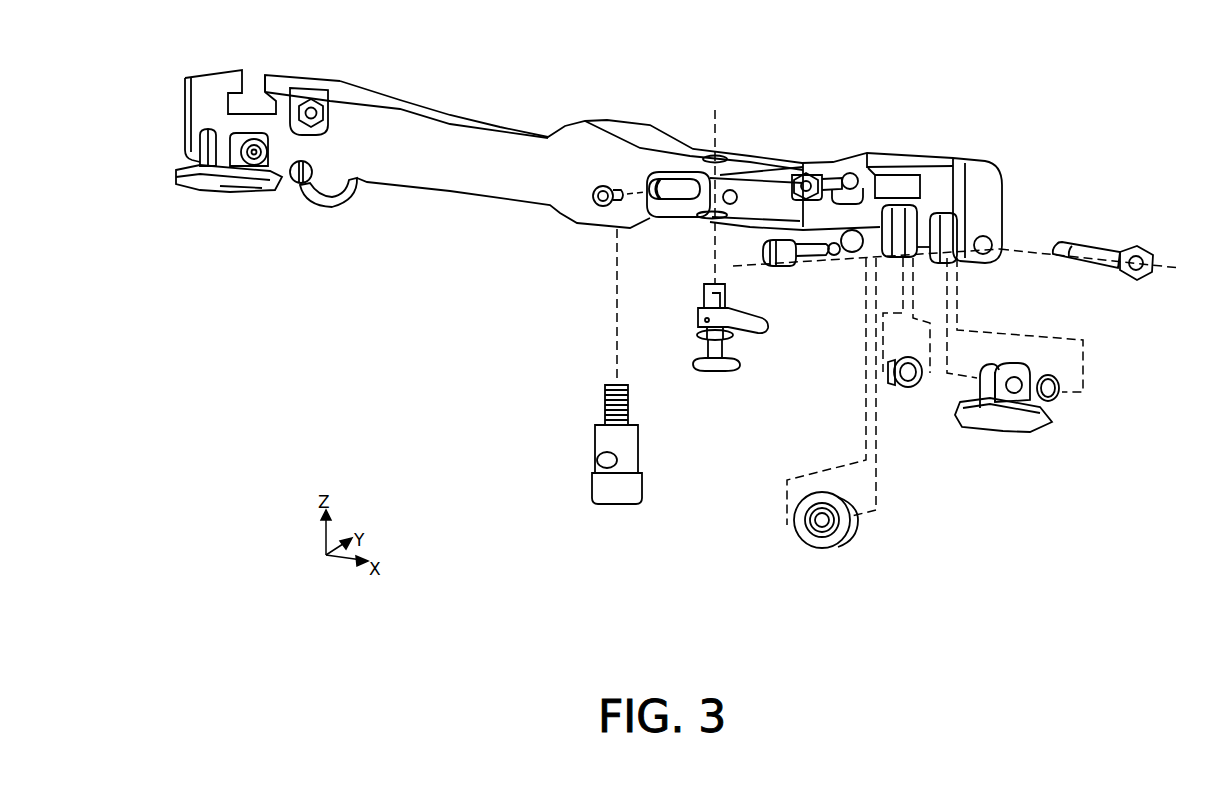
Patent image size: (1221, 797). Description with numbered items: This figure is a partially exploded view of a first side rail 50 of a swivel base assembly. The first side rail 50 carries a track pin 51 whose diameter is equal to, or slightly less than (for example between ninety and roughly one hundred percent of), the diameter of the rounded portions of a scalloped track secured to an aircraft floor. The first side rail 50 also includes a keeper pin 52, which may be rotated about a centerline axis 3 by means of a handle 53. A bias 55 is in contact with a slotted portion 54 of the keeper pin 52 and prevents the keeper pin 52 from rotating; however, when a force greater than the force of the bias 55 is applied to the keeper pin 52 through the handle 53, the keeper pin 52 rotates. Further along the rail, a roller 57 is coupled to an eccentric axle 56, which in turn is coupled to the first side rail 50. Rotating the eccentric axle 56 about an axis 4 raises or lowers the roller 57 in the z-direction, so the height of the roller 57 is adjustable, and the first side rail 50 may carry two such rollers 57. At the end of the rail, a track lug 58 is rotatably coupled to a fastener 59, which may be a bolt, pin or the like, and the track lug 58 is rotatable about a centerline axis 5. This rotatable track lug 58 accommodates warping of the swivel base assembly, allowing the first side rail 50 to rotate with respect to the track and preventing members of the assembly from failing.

The first side rail 50 is at (470, 118).
The centerline axis 3 is at (719, 131).
The axis 4 is at (745, 268).
The centerline axis 5 is at (1178, 267).
The track pin 51 is at (592, 440).
The keeper pin 52 is at (703, 355).
The handle 53 is at (765, 333).
The slotted portion 54 is at (698, 300).
The bias 55 is at (660, 225).
The eccentric axle 56 is at (800, 265).
The roller 57 is at (855, 548).
The track lug 58 is at (1040, 430).
The fastener 59 is at (1135, 285).